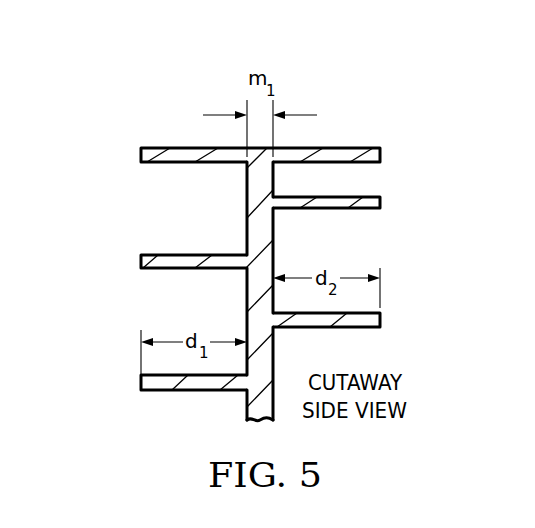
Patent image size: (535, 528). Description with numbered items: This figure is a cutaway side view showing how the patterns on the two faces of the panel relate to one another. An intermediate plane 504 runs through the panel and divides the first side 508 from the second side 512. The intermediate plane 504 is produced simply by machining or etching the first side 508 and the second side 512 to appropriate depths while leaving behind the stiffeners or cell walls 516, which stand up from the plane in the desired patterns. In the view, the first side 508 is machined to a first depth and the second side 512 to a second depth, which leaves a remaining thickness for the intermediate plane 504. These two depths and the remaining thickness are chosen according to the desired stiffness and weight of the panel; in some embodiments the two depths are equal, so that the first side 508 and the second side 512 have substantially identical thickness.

The intermediate plane 504 is at (338, 148).
The first side 508 is at (120, 205).
The second side 512 is at (400, 245).
The stiffeners or cell walls 516 is at (197, 390).